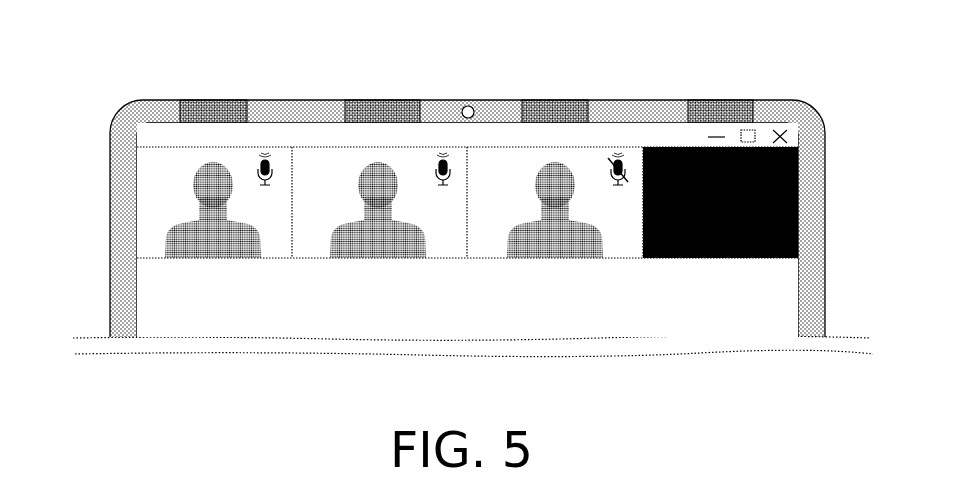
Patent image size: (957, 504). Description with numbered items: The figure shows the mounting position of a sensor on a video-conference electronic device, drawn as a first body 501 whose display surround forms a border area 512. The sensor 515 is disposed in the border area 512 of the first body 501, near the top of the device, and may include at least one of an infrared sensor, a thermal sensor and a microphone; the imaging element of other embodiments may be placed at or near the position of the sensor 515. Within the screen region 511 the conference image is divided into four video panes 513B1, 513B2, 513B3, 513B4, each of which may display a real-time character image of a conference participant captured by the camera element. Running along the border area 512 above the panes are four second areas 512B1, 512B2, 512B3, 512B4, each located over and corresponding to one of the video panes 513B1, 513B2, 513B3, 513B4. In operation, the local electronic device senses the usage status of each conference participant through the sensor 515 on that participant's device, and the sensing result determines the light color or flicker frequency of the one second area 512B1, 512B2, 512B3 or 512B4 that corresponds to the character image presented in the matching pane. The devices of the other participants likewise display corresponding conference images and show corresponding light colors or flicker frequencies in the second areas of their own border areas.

The first body 501 is at (460, 183).
The display screen 511 is at (782, 302).
The border area 512 is at (812, 247).
The second area 512B1 is at (220, 115).
The second area 512B2 is at (384, 115).
The second area 512B3 is at (578, 115).
The second area 512B4 is at (742, 115).
The video pane 513B1 is at (155, 168).
The video pane 513B2 is at (319, 168).
The video pane 513B3 is at (523, 168).
The video pane 513B4 is at (690, 147).
The sensor 515 is at (466, 105).